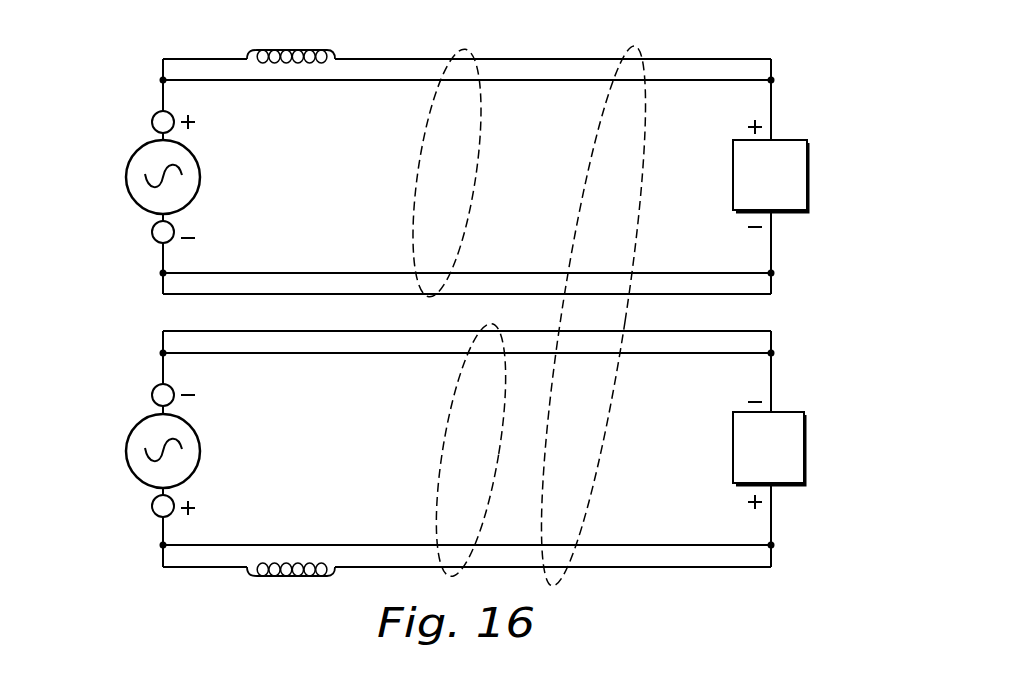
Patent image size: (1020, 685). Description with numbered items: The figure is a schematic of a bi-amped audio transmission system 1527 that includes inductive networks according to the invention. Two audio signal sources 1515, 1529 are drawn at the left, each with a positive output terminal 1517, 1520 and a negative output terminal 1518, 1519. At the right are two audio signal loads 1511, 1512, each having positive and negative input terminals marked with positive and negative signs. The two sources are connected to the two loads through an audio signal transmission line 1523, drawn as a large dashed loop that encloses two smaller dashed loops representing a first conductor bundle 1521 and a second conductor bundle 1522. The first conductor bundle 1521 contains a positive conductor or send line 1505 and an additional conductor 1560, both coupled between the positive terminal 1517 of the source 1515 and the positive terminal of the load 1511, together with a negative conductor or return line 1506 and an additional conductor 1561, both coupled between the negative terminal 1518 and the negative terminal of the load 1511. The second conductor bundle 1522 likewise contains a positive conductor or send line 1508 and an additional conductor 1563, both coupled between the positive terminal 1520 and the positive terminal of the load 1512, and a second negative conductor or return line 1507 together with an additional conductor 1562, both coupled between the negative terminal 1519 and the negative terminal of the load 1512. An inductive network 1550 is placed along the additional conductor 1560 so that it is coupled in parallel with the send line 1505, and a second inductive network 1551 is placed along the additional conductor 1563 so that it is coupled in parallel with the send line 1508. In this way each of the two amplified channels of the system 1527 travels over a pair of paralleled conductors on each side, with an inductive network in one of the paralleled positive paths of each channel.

The positive conductor or send line 1505 is at (666, 82).
The negative conductor or return line 1506 is at (700, 295).
The second negative conductor or return line 1507 is at (362, 330).
The positive conductor or send line 1508 is at (680, 543).
The audio signal load 1511 is at (784, 212).
The audio signal load 1512 is at (783, 485).
The audio signal source 1515 is at (144, 211).
The positive output terminal 1517 is at (151, 120).
The negative output terminal 1518 is at (153, 240).
The negative output terminal 1519 is at (151, 393).
The positive output terminal 1520 is at (153, 514).
The conductor bundle 1521 is at (432, 127).
The conductor bundle 1522 is at (455, 398).
The audio signal transmission line 1523 is at (600, 117).
The bi-amped audio transmission system 1527 is at (786, 112).
The audio signal source 1529 is at (144, 486).
The inductive network 1550 is at (297, 46).
The inductive network 1551 is at (283, 580).
The additional conductor 1560 is at (693, 58).
The additional conductor 1561 is at (547, 270).
The additional conductor 1562 is at (648, 355).
The additional conductor 1563 is at (740, 568).